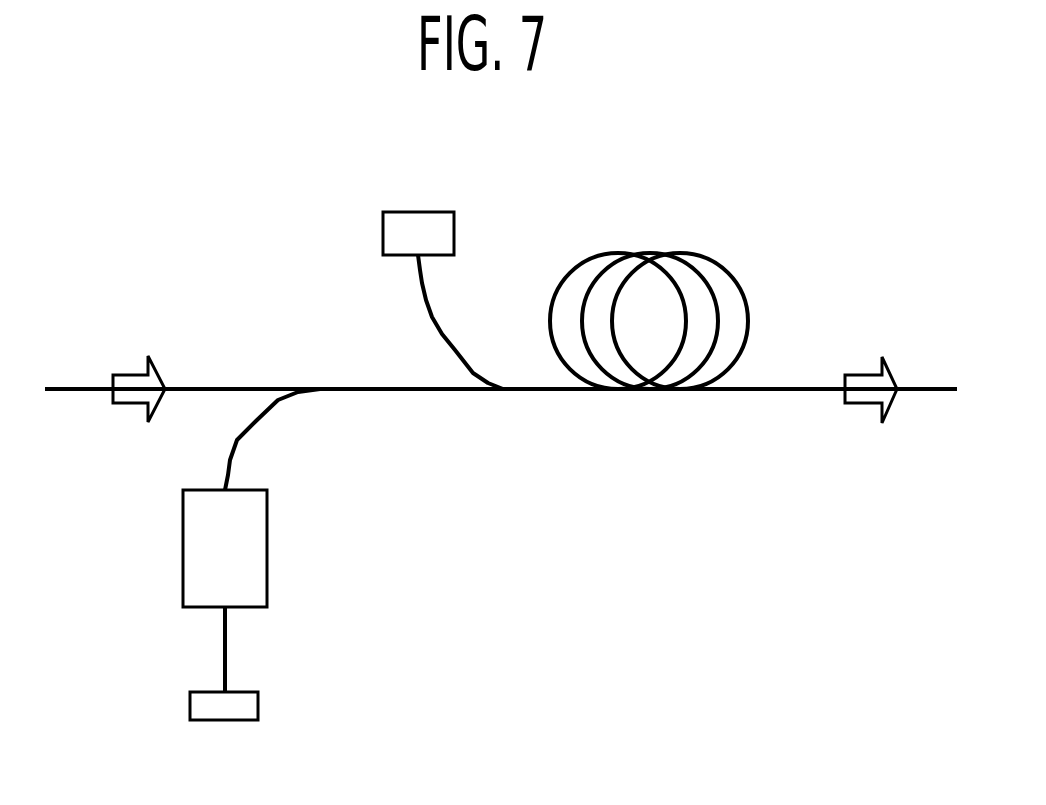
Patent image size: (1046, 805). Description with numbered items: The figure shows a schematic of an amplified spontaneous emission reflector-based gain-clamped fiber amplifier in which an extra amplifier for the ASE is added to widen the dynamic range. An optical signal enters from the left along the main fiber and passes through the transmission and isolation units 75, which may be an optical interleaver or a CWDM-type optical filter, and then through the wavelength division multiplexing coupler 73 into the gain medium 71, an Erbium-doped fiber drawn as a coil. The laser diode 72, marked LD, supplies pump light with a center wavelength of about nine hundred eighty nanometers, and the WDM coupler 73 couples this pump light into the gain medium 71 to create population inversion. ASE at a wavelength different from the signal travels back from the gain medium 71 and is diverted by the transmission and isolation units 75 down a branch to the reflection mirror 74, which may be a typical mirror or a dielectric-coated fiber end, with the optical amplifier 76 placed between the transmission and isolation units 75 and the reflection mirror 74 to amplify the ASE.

The gain medium 71 is at (743, 285).
The laser diode 72 is at (383, 233).
The wavelength division multiplexing coupler 73 is at (505, 391).
The reflection mirror 74 is at (245, 708).
The transmission and isolation units 75 is at (320, 388).
The optical amplifier 76 is at (257, 548).